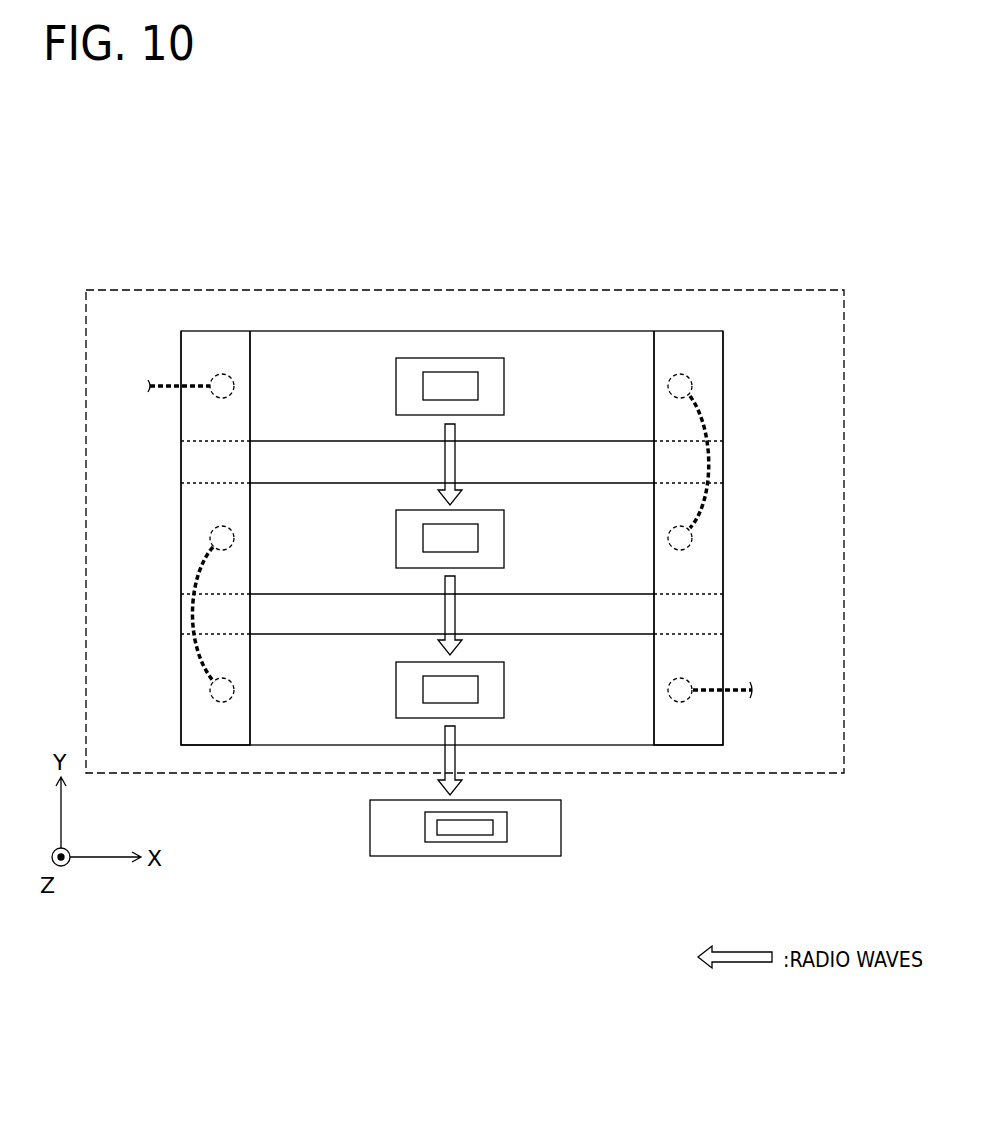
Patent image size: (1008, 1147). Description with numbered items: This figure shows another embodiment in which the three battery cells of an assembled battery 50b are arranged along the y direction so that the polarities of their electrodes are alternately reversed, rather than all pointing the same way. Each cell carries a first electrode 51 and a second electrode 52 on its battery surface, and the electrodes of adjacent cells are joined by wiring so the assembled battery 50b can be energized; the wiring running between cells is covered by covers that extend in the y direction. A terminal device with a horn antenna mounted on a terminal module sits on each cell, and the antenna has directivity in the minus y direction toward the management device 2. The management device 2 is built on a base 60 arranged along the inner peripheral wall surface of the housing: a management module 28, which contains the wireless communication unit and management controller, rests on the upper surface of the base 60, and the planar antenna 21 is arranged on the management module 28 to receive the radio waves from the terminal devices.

The assembled battery 50b is at (740, 288).
The first electrode 51 is at (232, 375).
The second electrode 52 is at (232, 526).
The base 60 is at (392, 842).
The management device 2 is at (486, 884).
The antenna 21 is at (470, 842).
The management module 28 is at (452, 845).